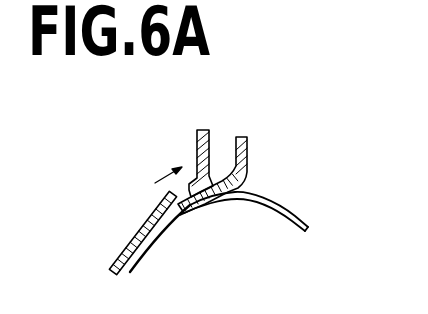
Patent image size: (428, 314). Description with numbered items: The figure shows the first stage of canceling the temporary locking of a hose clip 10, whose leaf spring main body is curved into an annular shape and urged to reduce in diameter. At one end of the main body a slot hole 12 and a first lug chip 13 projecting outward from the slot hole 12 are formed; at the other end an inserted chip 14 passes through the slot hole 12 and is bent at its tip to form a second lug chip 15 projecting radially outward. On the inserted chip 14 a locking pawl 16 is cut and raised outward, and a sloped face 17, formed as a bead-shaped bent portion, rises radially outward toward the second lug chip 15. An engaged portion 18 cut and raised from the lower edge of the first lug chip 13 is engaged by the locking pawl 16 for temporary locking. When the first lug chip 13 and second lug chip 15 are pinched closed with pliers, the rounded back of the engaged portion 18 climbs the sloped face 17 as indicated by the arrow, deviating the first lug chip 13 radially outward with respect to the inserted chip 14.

The hose clip 10 is at (300, 198).
The slot hole 12 is at (284, 207).
The first lug chip 13 is at (198, 143).
The inserted chip 14 is at (135, 258).
The second lug chip 15 is at (247, 140).
The locking pawl 16 is at (153, 208).
The sloped face 17 is at (233, 170).
The engaged portion 18 is at (190, 188).